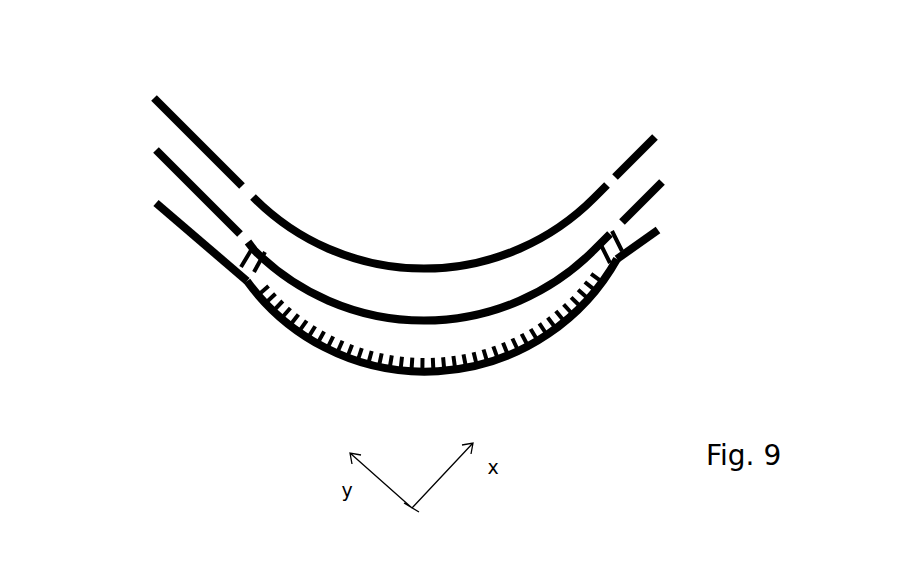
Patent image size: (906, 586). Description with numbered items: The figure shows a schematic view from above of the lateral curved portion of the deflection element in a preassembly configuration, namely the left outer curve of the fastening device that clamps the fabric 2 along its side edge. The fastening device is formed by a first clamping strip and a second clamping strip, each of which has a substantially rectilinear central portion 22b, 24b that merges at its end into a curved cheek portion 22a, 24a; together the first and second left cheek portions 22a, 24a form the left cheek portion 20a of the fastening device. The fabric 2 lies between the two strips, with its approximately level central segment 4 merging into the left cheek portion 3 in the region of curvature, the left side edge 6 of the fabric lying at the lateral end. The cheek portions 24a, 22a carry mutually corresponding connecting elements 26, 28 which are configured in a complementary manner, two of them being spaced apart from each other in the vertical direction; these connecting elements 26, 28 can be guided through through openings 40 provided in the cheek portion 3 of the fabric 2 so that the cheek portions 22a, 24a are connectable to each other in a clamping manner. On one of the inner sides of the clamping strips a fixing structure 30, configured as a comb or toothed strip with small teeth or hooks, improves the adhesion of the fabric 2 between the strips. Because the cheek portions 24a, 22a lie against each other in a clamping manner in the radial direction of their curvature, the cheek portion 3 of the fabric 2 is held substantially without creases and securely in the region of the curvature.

The fabric 2 is at (428, 318).
The left cheek portion 3 is at (429, 251).
The central segment 4 is at (170, 165).
The left side edge 6 is at (654, 178).
The left cheek portion 20a is at (486, 154).
The curved cheek portion 22a is at (412, 378).
The central portion 22b is at (157, 203).
The curved cheek portion 24a is at (354, 258).
The central portion 24b is at (190, 133).
The connecting element 26 is at (246, 272).
The connecting element 28 is at (251, 190).
The fixing structure 30 is at (309, 342).
The through opening 40 is at (428, 278).